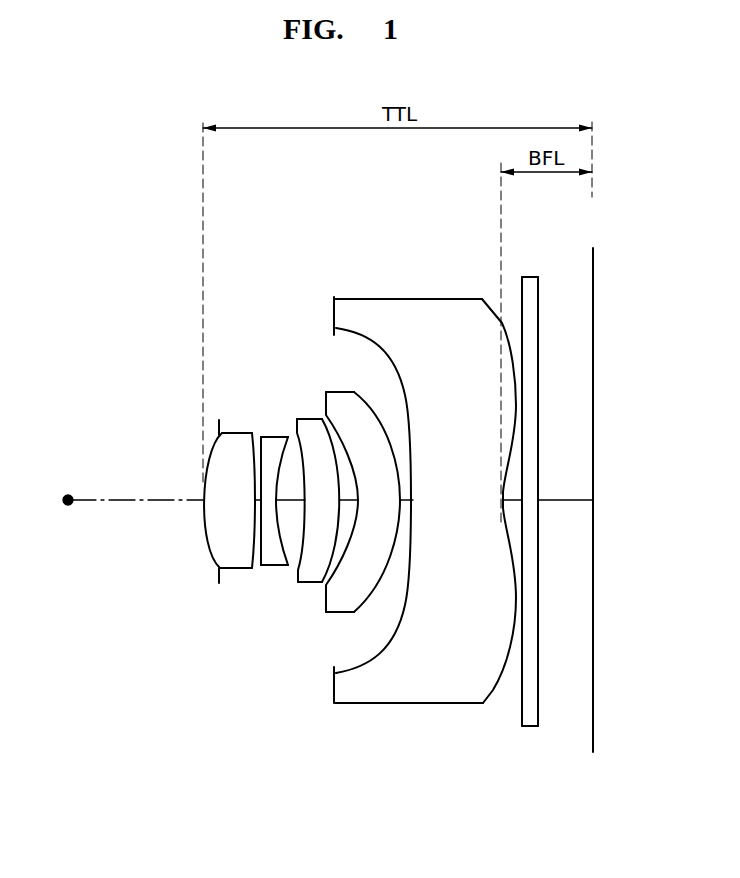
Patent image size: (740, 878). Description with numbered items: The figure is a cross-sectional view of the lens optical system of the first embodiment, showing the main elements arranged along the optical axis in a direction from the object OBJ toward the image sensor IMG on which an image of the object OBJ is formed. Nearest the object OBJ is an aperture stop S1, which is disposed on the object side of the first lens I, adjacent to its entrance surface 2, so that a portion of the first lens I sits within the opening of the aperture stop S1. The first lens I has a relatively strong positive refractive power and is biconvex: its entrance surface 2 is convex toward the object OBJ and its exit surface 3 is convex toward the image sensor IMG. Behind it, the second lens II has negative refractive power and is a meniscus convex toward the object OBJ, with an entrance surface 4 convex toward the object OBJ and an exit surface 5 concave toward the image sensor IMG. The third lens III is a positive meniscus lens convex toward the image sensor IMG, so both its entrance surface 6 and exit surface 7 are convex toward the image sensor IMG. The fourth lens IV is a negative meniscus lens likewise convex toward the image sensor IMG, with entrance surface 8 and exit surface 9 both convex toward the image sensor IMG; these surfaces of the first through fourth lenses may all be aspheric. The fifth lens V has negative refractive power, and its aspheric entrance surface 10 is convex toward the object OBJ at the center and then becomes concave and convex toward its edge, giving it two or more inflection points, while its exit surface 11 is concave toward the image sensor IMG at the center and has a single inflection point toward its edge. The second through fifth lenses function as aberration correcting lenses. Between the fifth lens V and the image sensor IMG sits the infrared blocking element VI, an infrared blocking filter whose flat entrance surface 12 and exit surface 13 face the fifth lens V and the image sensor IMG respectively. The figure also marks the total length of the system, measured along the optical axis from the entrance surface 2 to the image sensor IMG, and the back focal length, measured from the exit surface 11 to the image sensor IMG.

The object OBJ is at (68, 495).
The aperture stop S1 is at (217, 428).
The first lens I is at (237, 512).
The entrance surface of the first lens 2 is at (222, 434).
The exit surface of the first lens 3 is at (251, 434).
The second lens II is at (280, 483).
The entrance surface of the second lens 4 is at (268, 437).
The exit surface of the second lens 5 is at (283, 437).
The third lens III is at (317, 499).
The entrance surface of the third lens 6 is at (300, 419).
The exit surface of the third lens 7 is at (324, 430).
The fourth lens IV is at (347, 535).
The entrance surface of the fourth lens 8 is at (336, 427).
The exit surface of the fourth lens 9 is at (367, 405).
The fifth lens V is at (425, 518).
The entrance surface of the fifth lens 10 is at (393, 363).
The exit surface of the fifth lens 11 is at (495, 318).
The infrared blocking element VI is at (528, 515).
The entrance surface of the infrared blocking element 12 is at (522, 277).
The exit surface of the infrared blocking element 13 is at (538, 277).
The image sensor IMG is at (593, 252).